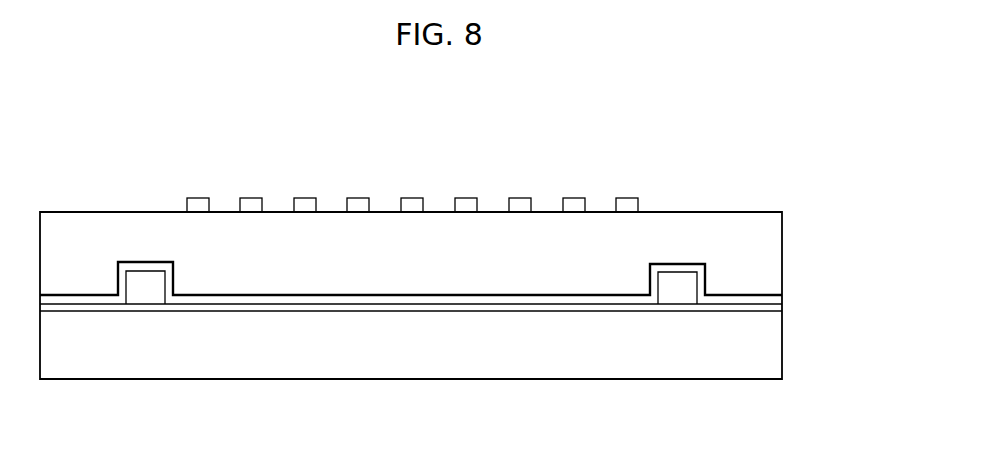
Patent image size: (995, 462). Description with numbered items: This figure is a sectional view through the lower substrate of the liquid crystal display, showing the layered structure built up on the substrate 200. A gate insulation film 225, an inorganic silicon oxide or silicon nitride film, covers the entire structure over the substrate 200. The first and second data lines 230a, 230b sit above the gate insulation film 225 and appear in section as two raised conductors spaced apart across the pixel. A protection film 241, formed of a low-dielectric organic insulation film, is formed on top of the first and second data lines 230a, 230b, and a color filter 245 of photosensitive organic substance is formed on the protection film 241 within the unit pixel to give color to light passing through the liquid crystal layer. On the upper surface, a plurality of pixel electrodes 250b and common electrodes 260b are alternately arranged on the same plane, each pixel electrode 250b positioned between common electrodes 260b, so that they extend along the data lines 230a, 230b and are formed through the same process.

The substrate 200 is at (780, 348).
The gate insulation film 225 is at (780, 310).
The first data line 230a is at (138, 296).
The second data line 230b is at (674, 298).
The protection film 241 is at (780, 299).
The color filter 245 is at (780, 247).
The pixel electrodes 250b is at (252, 204).
The common electrodes 260b is at (194, 204).